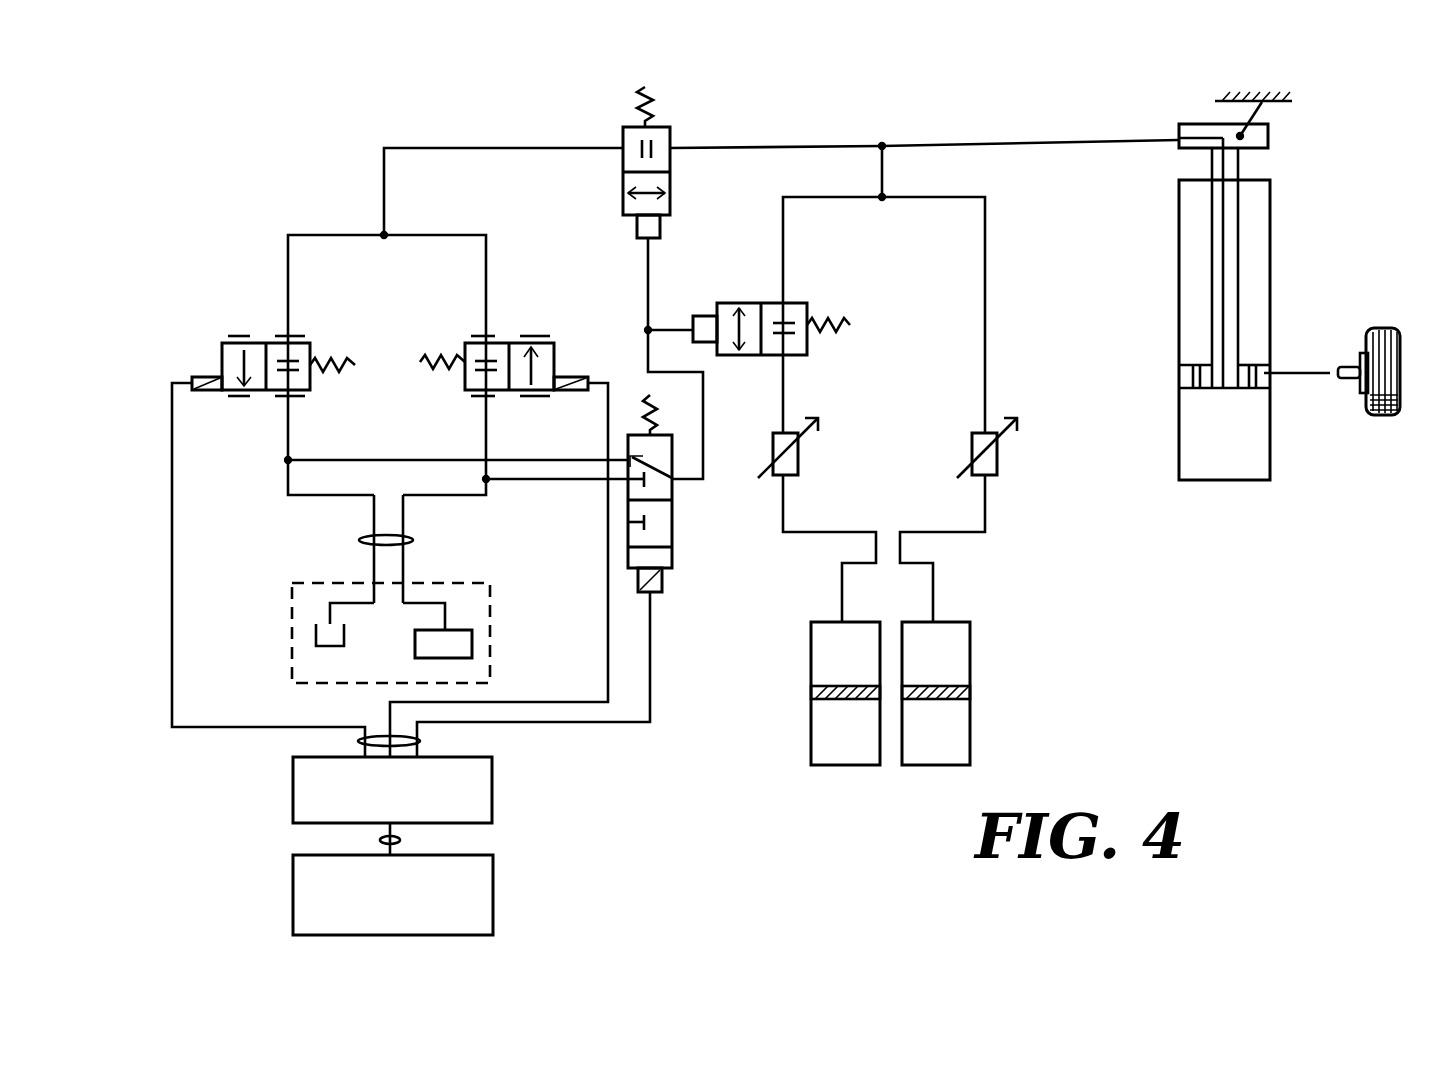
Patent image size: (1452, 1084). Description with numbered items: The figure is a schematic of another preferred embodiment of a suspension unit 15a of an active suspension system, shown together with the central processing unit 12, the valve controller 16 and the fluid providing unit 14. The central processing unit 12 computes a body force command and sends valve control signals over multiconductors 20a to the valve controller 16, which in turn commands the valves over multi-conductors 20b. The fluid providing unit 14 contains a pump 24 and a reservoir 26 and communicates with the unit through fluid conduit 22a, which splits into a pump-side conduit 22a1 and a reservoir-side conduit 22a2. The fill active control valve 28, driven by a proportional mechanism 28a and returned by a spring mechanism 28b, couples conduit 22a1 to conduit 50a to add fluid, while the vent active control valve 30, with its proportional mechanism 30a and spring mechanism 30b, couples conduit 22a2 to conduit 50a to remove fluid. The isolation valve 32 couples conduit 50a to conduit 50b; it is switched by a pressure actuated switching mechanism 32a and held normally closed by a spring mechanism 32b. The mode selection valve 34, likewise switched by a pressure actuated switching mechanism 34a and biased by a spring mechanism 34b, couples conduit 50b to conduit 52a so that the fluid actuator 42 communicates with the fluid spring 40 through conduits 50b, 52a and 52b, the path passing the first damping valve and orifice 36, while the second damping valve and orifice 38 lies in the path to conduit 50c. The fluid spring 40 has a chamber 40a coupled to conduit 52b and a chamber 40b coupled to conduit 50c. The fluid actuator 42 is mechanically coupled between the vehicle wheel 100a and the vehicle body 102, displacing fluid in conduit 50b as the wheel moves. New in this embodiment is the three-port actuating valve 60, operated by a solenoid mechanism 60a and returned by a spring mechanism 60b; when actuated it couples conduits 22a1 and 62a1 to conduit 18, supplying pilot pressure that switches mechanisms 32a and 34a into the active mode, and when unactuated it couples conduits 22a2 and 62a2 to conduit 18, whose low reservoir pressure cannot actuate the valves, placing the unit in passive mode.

The central processing unit 12 is at (493, 878).
The fluid providing unit 14 is at (491, 616).
The suspension unit 15a is at (1012, 118).
The valve controller 16 is at (492, 783).
The fluid conduit 18 is at (694, 482).
The multiconductors 20a is at (400, 840).
The multi-conductors 20b is at (420, 741).
The fluid conduit 22a is at (413, 540).
The fluid conduit 22a1 is at (463, 498).
The fluid conduit 22a2 is at (286, 462).
The pump 24 is at (437, 630).
The reservoir 26 is at (345, 636).
The fill active control valve 28 is at (574, 350).
The proportional mechanism 28a is at (578, 378).
The spring mechanism 28b is at (425, 373).
The vent active control valve 30 is at (203, 348).
The proportional mechanism 30a is at (205, 391).
The spring mechanism 30b is at (355, 365).
The isolation valve 32 is at (685, 204).
The pressure actuated switching mechanism 32a is at (636, 225).
The spring mechanism 32b is at (655, 107).
The mode selection valve 34 is at (745, 298).
The pressure actuated switching mechanism 34a is at (700, 316).
The spring mechanism 34b is at (850, 325).
The first damping valve and orifice 36 is at (805, 462).
The second damping valve and orifice 38 is at (965, 438).
The fluid spring 40 is at (893, 693).
The chamber 40a is at (810, 658).
The chamber 40b is at (990, 737).
The fluid actuator 42 is at (1160, 512).
The fluid conduit 50a is at (470, 147).
The fluid conduit 50b is at (742, 148).
The fluid conduit 50c is at (988, 495).
The fluid conduit 52a is at (785, 392).
The fluid conduit 52b is at (820, 537).
The actuating valve 60 is at (688, 549).
The solenoid mechanism 60a is at (664, 582).
The spring mechanism 60b is at (652, 398).
The fluid conduit 62a1 is at (522, 483).
The fluid conduit 62a2 is at (528, 459).
The vehicle wheel 100a is at (1380, 438).
The vehicle body 102 is at (1295, 101).